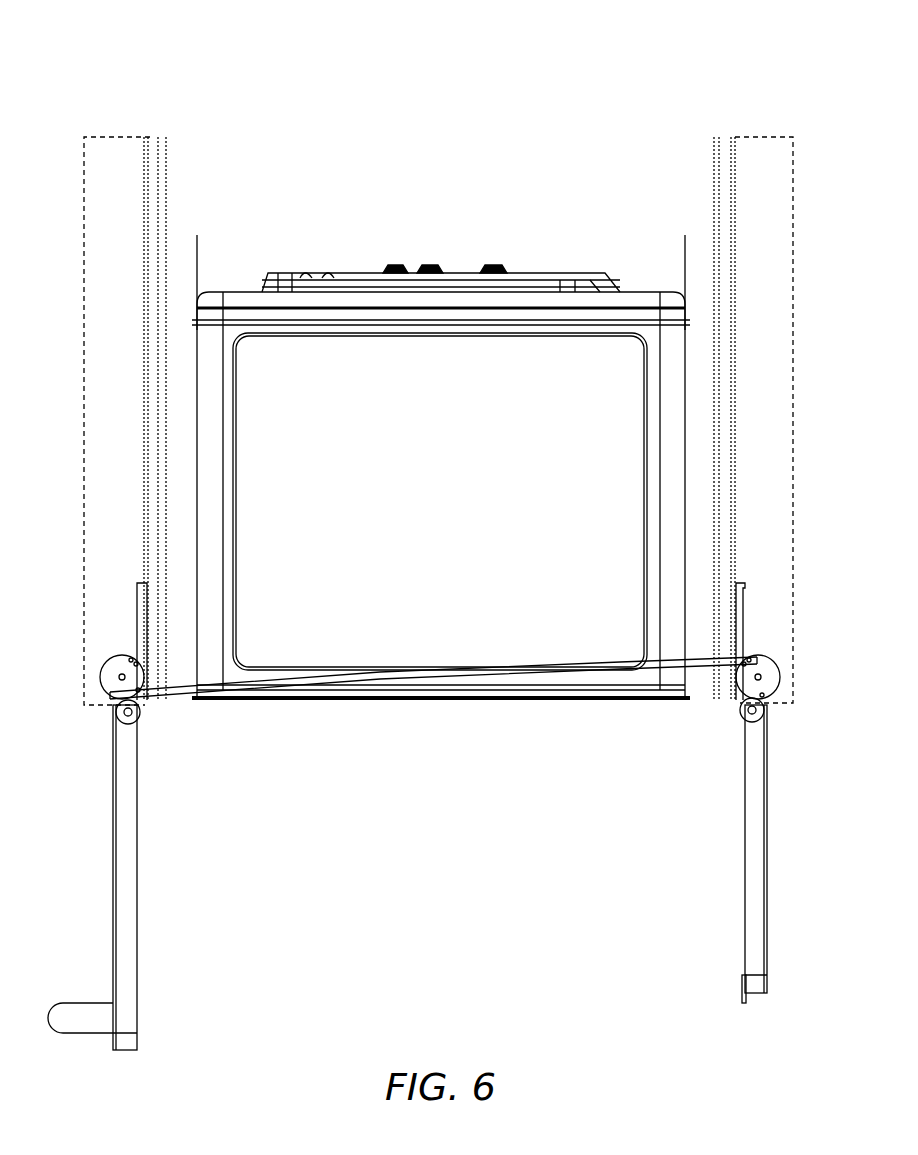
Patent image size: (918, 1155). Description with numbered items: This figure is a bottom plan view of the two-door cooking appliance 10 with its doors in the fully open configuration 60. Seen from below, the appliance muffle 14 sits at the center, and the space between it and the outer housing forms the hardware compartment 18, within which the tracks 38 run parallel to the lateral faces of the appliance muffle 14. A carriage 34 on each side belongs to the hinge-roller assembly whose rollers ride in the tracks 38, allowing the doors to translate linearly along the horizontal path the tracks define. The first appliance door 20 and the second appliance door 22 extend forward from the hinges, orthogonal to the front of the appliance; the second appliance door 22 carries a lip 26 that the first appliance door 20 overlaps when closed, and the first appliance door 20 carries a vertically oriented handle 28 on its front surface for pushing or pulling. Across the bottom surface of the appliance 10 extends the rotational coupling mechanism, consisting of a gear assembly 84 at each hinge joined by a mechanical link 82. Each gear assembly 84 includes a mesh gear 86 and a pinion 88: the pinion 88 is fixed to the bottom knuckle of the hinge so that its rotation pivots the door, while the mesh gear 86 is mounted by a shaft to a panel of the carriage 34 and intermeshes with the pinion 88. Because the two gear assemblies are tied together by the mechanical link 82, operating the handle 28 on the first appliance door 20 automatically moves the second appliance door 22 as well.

The two-door cooking appliance 10 is at (573, 58).
The open configuration 60 is at (608, 90).
The hardware compartment 18 is at (772, 137).
The tracks 38 is at (730, 280).
The carriage 34 is at (742, 592).
The appliance muffle 14 is at (422, 425).
The gear assembly 84 is at (100, 658).
The mesh gear 86 is at (763, 667).
The pinion 88 is at (747, 717).
The mechanical link 82 is at (600, 668).
The first appliance door 20 is at (127, 935).
The second appliance door 22 is at (757, 920).
The lip 26 is at (743, 995).
The handle 28 is at (66, 1022).